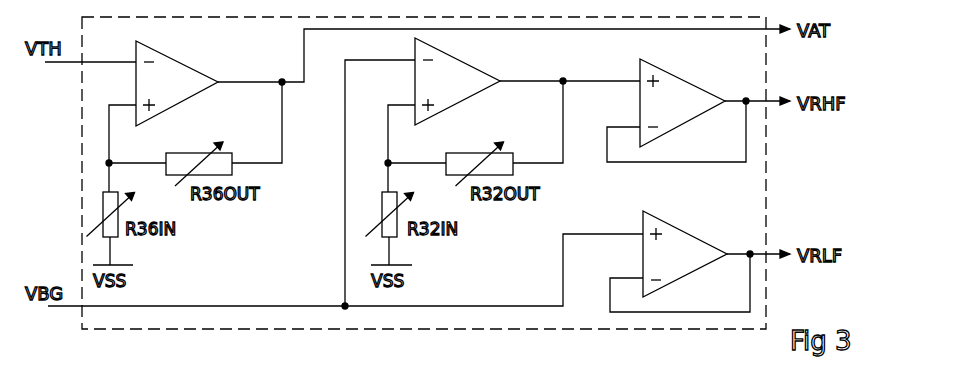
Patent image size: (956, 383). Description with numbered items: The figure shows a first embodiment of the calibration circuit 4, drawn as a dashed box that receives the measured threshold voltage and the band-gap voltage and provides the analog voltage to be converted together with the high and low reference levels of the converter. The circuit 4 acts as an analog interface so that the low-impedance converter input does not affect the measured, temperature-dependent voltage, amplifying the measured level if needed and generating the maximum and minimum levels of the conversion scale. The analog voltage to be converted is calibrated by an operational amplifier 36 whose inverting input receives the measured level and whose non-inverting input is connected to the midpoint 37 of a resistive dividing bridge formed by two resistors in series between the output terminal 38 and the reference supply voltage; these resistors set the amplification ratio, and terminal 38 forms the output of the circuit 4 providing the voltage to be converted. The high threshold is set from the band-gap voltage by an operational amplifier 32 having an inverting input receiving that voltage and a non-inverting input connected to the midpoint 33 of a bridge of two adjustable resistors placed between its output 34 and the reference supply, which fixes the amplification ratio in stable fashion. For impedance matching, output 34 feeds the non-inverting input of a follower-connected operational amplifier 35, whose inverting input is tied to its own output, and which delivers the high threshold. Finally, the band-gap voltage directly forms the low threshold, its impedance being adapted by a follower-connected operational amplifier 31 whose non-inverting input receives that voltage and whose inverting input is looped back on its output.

The operational amplifier 36 is at (165, 47).
The midpoint 37 is at (109, 163).
The output terminal 38 is at (282, 82).
The operational amplifier 32 is at (457, 57).
The midpoint 33 is at (388, 163).
The output 34 is at (563, 73).
The follower-connected operational amplifier 35 is at (682, 75).
The follower-connected operational amplifier 31 is at (688, 228).
The calibration circuit 4 is at (503, 331).